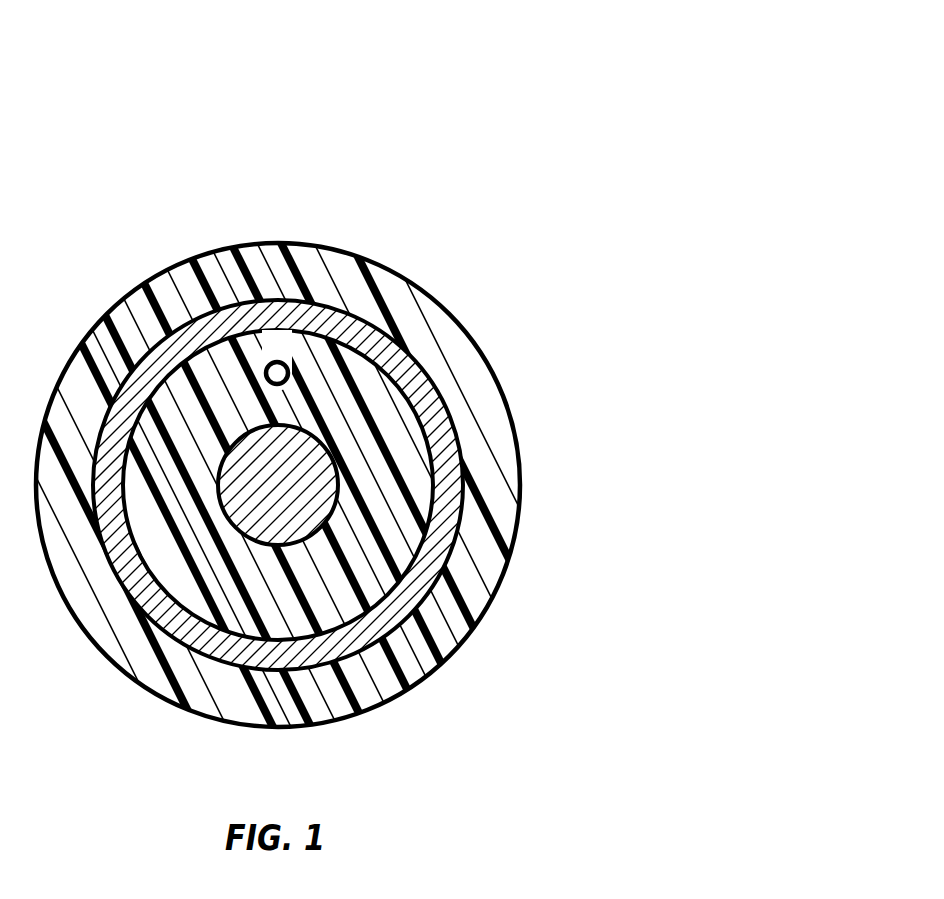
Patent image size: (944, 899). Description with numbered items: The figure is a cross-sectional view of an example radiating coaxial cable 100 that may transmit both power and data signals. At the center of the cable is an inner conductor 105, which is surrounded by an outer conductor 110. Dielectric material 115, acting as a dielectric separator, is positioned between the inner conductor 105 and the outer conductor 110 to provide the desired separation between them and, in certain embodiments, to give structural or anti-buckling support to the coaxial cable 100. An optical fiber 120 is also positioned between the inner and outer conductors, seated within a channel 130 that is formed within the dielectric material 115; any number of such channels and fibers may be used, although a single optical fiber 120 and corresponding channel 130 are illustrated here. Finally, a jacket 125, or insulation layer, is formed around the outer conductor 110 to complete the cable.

The radiating coaxial cable 100 is at (131, 82).
The inner conductor 105 is at (312, 500).
The outer conductor 110 is at (466, 432).
The dielectric material 115 is at (380, 540).
The optical fiber 120 is at (255, 346).
The jacket 125 is at (450, 632).
The channel 130 is at (298, 325).